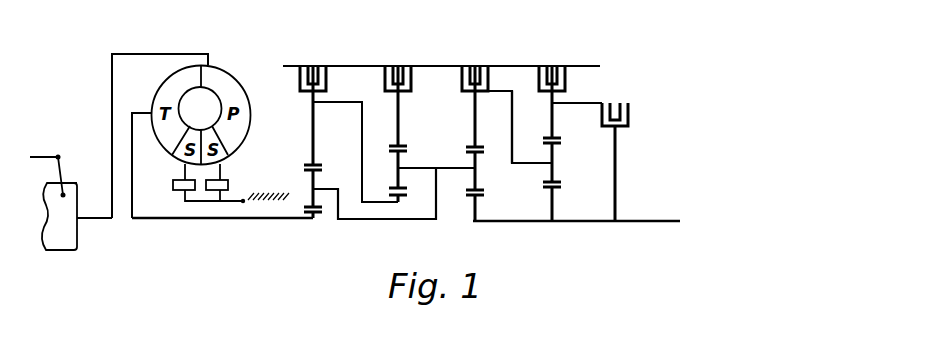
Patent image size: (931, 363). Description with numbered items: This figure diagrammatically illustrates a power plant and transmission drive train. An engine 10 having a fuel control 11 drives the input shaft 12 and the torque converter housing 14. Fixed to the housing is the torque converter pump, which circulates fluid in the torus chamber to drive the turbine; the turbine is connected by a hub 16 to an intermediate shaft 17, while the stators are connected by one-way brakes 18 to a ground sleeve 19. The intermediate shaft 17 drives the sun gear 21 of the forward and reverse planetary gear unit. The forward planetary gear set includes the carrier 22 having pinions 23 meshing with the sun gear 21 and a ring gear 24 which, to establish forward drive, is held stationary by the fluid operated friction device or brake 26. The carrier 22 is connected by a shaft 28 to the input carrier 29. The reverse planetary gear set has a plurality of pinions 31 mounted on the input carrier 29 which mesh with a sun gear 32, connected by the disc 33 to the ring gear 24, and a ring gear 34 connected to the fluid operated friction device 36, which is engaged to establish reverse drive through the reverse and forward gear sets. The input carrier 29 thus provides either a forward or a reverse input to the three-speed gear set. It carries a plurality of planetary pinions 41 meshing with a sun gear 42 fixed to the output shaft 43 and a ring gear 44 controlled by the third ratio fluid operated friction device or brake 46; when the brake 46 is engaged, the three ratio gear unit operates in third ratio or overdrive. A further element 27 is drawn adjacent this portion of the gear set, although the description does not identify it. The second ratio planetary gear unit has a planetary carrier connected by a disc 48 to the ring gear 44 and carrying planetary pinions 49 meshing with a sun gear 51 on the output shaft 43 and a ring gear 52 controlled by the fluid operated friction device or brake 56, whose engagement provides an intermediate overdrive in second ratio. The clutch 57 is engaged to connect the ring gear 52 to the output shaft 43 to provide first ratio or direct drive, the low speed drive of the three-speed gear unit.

The engine 10 is at (58, 250).
The fuel control 11 is at (43, 157).
The input shaft 12 is at (92, 220).
The torque converter housing 14 is at (153, 54).
The hub 16 is at (133, 160).
The intermediate shaft 17 is at (190, 219).
The one-way brakes 18 is at (222, 181).
The ground sleeve 19 is at (247, 201).
The sun gear 21 is at (314, 220).
The carrier 22 is at (320, 187).
The pinions 23 is at (311, 180).
The ring gear 24 is at (311, 162).
The fluid operated friction device or brake 26 is at (313, 65).
The conductor 27 is at (511, 167).
The shaft 28 is at (383, 220).
The input carrier 29 is at (438, 176).
The pinions 31 is at (402, 162).
The sun gear 32 is at (401, 197).
The disc 33 is at (362, 146).
The ring gear 34 is at (397, 143).
The fluid operated friction device 36 is at (398, 65).
The planetary pinions 41 is at (477, 160).
The sun gear 42 is at (479, 222).
The output shaft 43 is at (565, 222).
The ring gear 44 is at (473, 144).
The third ratio fluid operated friction device or brake 46 is at (475, 65).
The disc 48 is at (513, 104).
The planetary pinions 49 is at (558, 146).
The sun gear 51 is at (556, 188).
The ring gear 52 is at (555, 136).
The fluid operated friction device or brake 56 is at (553, 65).
The clutch 57 is at (630, 114).